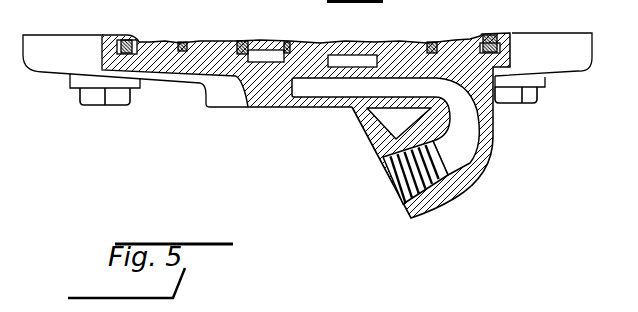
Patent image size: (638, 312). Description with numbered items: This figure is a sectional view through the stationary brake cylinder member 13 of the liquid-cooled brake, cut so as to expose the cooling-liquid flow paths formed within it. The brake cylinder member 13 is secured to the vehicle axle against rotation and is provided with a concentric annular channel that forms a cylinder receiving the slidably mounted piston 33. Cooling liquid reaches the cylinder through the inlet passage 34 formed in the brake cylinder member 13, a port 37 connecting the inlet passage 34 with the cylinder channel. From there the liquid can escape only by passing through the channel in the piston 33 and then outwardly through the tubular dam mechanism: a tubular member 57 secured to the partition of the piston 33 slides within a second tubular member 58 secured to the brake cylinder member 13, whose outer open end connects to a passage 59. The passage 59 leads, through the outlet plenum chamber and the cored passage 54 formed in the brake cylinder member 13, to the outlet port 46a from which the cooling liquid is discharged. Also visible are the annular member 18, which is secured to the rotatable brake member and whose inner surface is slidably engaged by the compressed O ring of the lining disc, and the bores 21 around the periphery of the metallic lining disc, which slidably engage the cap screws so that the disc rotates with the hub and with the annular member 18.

The brake cylinder member 13 is at (573, 68).
The annular member 18 is at (490, 35).
The bores 21 is at (349, 1).
The piston 33 is at (432, 42).
The inlet passage 34 is at (342, 63).
The port 37 is at (353, 53).
The outlet port 46a is at (403, 207).
The cored passage 54 is at (468, 151).
The tubular member 57 is at (249, 44).
The second tubular member 58 is at (241, 40).
The passage 59 is at (240, 72).